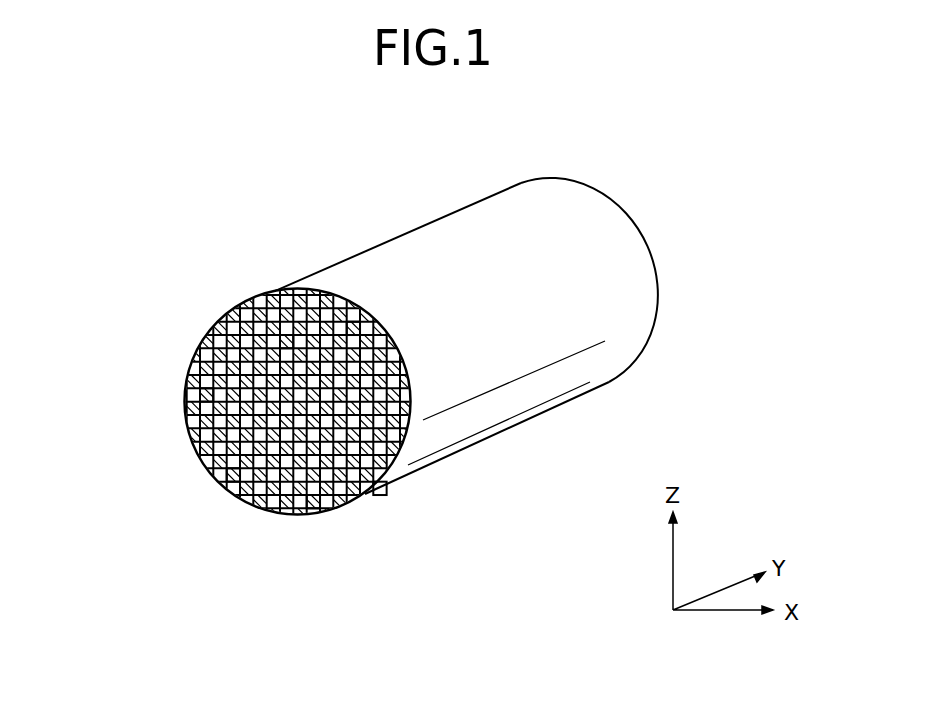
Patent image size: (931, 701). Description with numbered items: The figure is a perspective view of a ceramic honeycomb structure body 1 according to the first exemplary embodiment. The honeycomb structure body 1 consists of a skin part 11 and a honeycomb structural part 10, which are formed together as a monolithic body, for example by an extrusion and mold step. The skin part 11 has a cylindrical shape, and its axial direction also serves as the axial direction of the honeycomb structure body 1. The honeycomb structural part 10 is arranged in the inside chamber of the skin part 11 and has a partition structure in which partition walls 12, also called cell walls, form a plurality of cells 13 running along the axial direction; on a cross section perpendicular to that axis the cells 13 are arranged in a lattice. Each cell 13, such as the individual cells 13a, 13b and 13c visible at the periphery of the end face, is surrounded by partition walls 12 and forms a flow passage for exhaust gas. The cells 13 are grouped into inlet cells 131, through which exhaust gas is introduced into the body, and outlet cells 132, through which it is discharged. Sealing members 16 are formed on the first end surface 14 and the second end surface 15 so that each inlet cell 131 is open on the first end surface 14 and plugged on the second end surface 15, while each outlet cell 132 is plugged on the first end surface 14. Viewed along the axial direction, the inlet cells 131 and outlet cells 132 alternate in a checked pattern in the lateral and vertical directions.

The honeycomb structure body 1 is at (414, 367).
The honeycomb structural part 10 is at (269, 386).
The skin part 11 is at (492, 412).
The partition wall 12 is at (213, 330).
The cell 13 is at (307, 402).
The cell 13a is at (217, 477).
The cell 13b is at (306, 505).
The cell 13c is at (380, 483).
The inlet cell 131 is at (292, 345).
The outlet cell 132 is at (347, 330).
The first end surface 14 is at (200, 420).
The second end surface 15 is at (660, 250).
The sealing member 16 is at (207, 397).